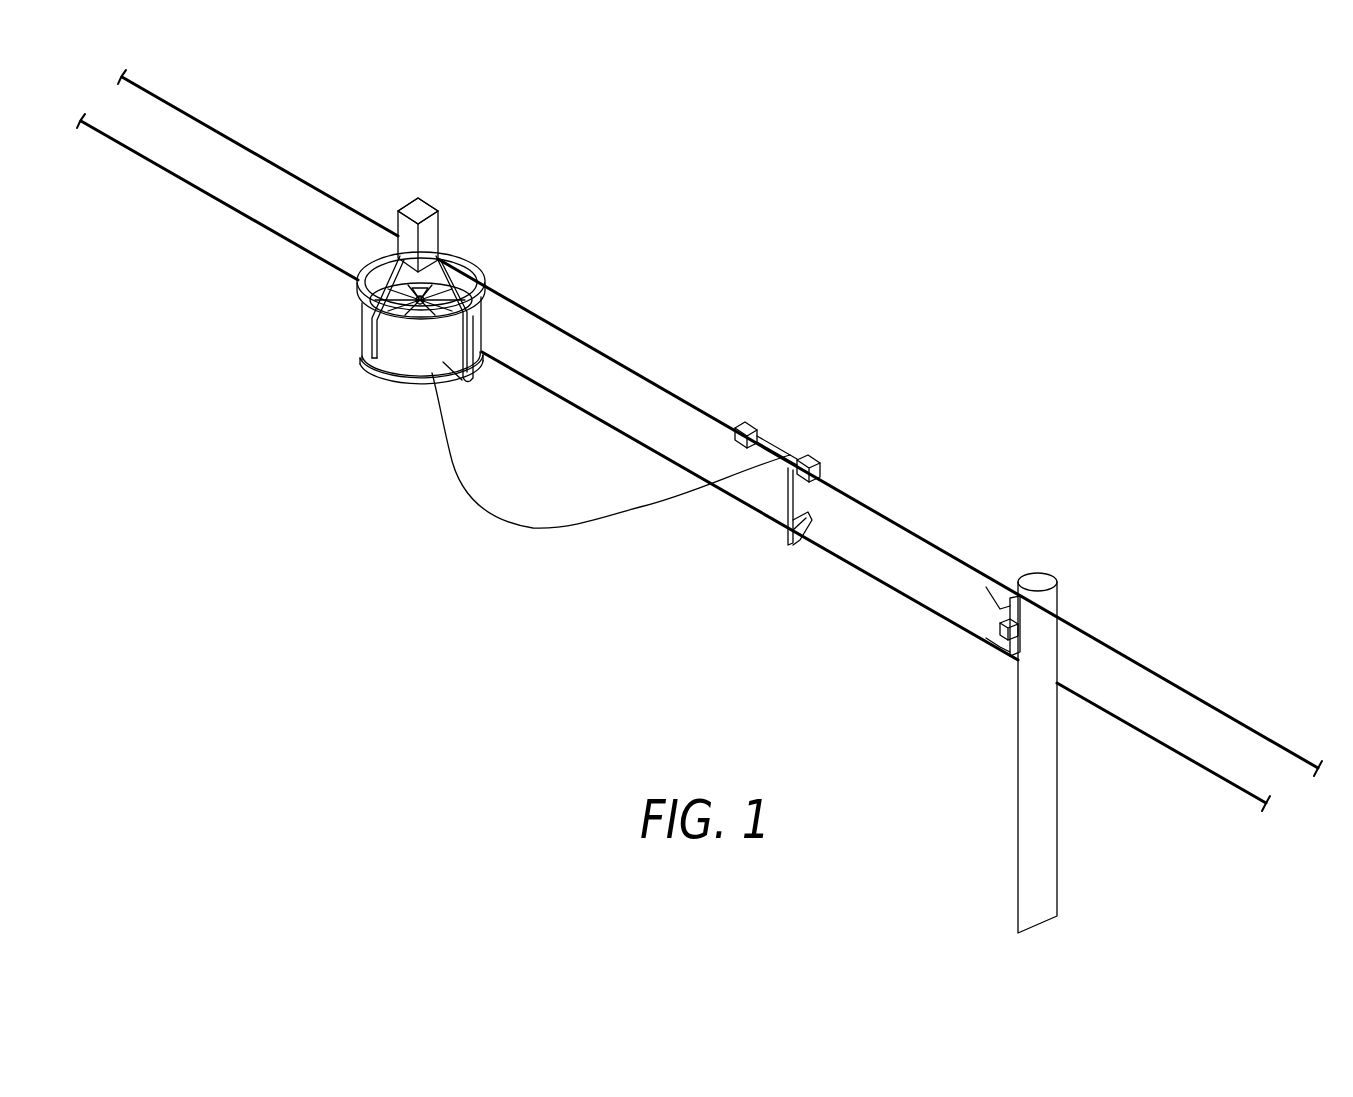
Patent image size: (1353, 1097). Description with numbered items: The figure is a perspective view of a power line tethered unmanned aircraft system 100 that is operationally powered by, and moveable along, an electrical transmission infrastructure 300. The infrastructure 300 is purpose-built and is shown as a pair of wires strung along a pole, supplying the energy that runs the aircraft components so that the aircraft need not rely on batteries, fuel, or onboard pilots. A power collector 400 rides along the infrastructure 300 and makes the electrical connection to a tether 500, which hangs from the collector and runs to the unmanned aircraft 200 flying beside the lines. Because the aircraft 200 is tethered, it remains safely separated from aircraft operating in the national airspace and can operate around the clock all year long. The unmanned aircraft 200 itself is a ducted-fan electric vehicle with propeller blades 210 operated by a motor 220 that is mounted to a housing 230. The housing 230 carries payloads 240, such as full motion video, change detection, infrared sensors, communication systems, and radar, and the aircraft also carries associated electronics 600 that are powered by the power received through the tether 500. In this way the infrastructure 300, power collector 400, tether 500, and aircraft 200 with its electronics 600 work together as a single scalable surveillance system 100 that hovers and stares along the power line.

The power line tethered unmanned aircraft system 100 is at (803, 244).
The unmanned aircraft 200 is at (487, 272).
The propeller blades 210 is at (365, 288).
The motor 220 is at (420, 313).
The housing 230 is at (352, 322).
The payloads 240 is at (409, 207).
The electrical transmission infrastructure 300 is at (956, 560).
The power collector 400 is at (811, 472).
The tether 500 is at (545, 530).
The associated electronics 600 is at (427, 200).